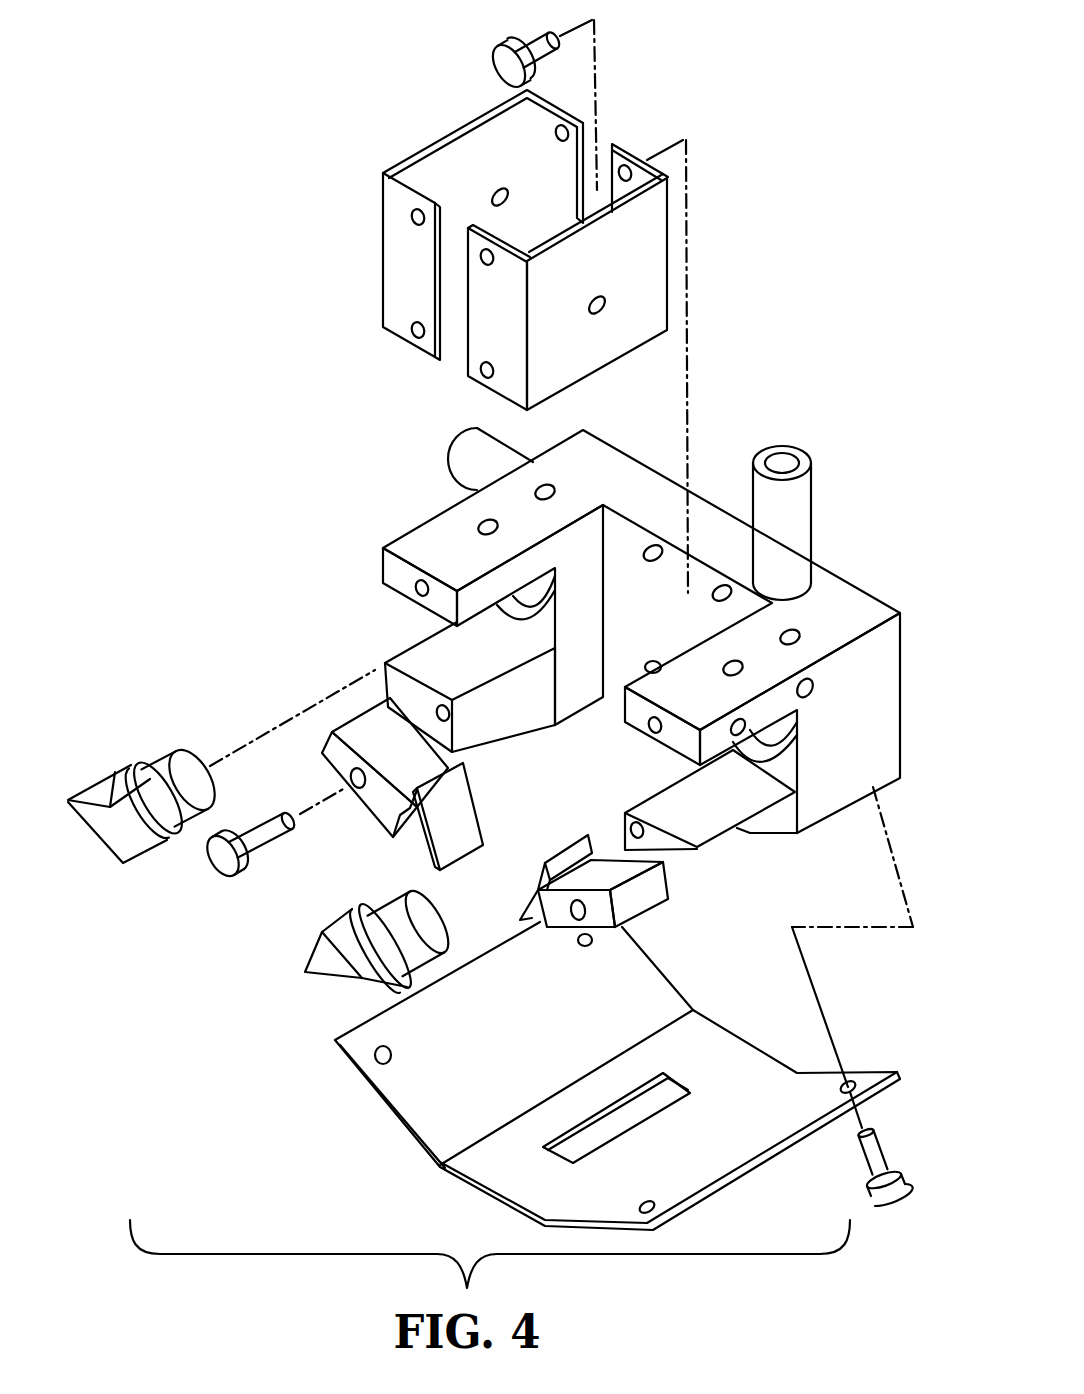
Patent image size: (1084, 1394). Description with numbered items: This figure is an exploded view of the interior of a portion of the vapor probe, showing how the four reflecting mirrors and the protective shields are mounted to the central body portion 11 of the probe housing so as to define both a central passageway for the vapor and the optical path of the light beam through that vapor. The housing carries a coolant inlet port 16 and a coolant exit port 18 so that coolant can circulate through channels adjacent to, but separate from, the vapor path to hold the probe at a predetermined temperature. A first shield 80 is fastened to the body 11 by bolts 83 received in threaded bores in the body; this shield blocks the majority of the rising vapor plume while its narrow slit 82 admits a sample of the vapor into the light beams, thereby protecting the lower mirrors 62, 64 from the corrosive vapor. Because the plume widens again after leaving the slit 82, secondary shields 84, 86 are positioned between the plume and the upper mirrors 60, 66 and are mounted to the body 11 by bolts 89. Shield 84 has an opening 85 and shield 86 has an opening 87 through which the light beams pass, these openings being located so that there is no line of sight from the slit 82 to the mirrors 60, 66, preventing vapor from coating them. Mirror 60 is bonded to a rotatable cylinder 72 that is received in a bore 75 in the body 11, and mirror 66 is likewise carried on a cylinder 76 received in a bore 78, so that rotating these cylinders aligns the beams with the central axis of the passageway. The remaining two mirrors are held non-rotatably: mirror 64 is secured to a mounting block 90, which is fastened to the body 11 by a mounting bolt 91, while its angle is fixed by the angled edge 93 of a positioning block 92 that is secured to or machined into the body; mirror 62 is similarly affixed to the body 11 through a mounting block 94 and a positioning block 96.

The central body portion 11 is at (641, 645).
The coolant inlet port 16 is at (814, 523).
The coolant exit port 18 is at (457, 459).
The mirror 60 is at (121, 836).
The mirror 62 is at (550, 867).
The mirror 64 is at (470, 816).
The mirror 66 is at (344, 962).
The rotatable cylinder 72 is at (174, 763).
The bore 75 is at (547, 594).
The cylinder 76 is at (423, 935).
The bore 78 is at (792, 742).
The first shield 80 is at (501, 1040).
The slit 82 is at (637, 1100).
The bolts 83 is at (852, 996).
The secondary shield 84 is at (451, 225).
The opening 85 is at (513, 170).
The secondary shield 86 is at (568, 277).
The opening 87 is at (619, 277).
The bolts 89 is at (559, 306).
The mounting block 90 is at (385, 781).
The mounting bolt 91 is at (273, 839).
The positioning block 92 is at (448, 670).
The angled edge 93 is at (297, 693).
The mounting block 94 is at (623, 903).
The positioning block 96 is at (728, 812).